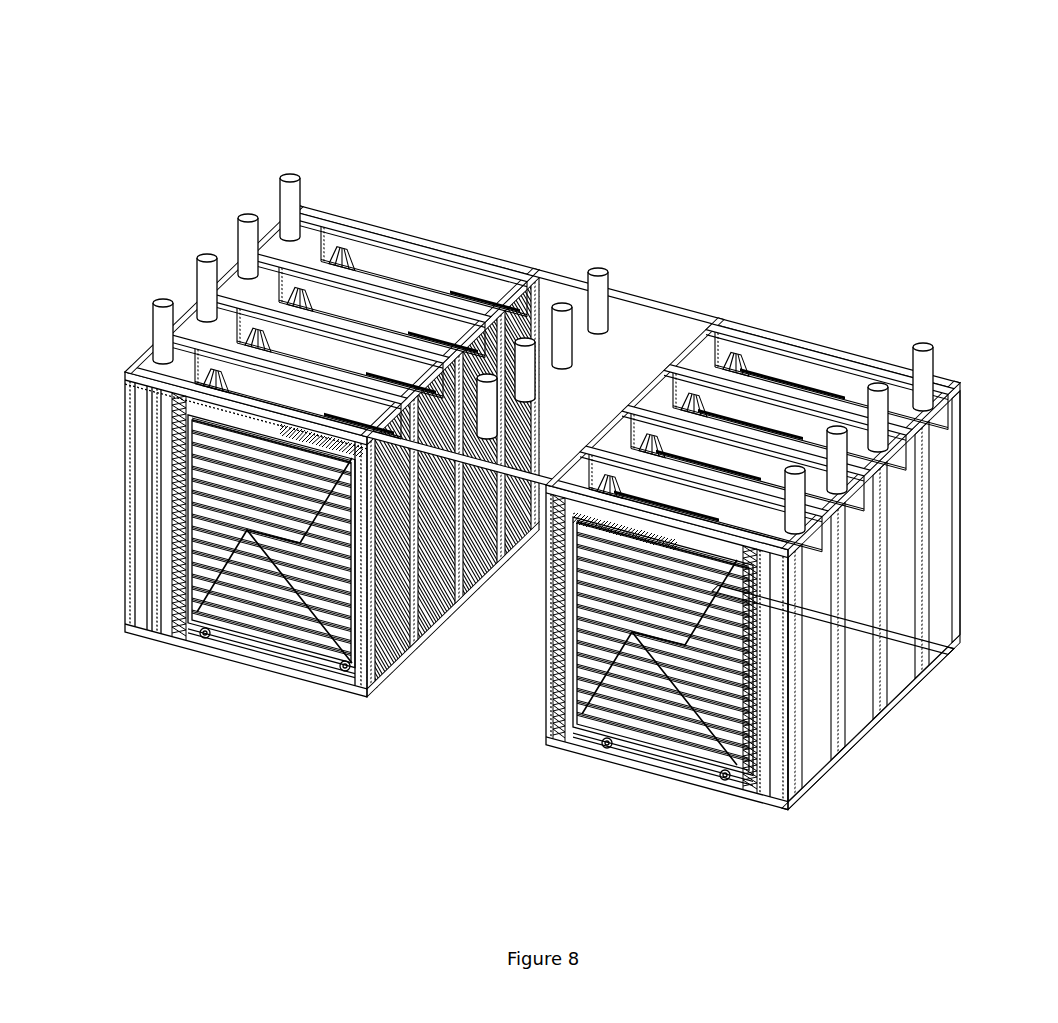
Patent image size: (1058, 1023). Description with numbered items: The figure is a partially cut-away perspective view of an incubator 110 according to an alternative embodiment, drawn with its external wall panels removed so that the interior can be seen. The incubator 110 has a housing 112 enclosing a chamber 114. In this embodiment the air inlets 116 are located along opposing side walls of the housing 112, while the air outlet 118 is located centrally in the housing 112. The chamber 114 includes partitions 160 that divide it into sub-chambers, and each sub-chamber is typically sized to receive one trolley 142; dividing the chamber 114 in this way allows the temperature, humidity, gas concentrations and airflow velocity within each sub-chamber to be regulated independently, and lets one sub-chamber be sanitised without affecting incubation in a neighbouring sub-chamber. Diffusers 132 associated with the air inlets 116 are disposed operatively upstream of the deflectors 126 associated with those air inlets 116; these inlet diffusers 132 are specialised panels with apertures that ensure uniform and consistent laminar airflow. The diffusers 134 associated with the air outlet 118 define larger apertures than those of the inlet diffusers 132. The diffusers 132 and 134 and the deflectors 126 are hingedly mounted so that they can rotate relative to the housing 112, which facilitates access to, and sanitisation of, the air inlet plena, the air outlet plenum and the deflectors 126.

The incubator 110 is at (775, 140).
The housing 112 is at (123, 410).
The chamber 114 is at (427, 262).
The air inlets 116 is at (132, 532).
The air outlet 118 is at (562, 305).
The deflectors 126 is at (175, 465).
The diffusers 132 is at (167, 397).
The diffusers 134 is at (393, 612).
The trolley 142 is at (235, 633).
The partitions 160 is at (313, 278).